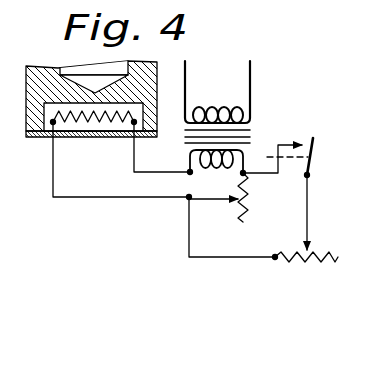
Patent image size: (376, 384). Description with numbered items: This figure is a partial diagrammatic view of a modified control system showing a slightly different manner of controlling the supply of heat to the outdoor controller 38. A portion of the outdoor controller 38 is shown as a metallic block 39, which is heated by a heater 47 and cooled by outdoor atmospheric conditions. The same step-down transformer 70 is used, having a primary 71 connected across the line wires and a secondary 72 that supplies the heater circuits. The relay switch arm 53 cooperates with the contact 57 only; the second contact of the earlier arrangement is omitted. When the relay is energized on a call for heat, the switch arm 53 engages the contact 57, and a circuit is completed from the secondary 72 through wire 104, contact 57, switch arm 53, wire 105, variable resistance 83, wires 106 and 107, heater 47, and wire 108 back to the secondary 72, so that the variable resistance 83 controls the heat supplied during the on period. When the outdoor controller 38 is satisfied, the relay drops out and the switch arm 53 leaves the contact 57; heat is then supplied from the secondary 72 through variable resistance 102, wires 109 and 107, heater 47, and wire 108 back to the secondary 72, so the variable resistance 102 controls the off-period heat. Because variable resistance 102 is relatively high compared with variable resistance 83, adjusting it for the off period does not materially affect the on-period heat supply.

The metallic block 39 is at (40, 66).
The outdoor controller 38 is at (38, 140).
The heater 47 is at (97, 128).
The wire 107 is at (88, 198).
The wire 108 is at (152, 171).
The wire 109 is at (206, 197).
The variable resistance 102 is at (239, 207).
The wire 106 is at (230, 258).
The variable resistance 83 is at (313, 251).
The wire 105 is at (311, 200).
The wire 104 is at (263, 174).
The contact 57 is at (297, 140).
The switch arm 53 is at (315, 152).
The step-down transformer 70 is at (240, 124).
The primary 71 is at (220, 106).
The secondary 72 is at (221, 163).